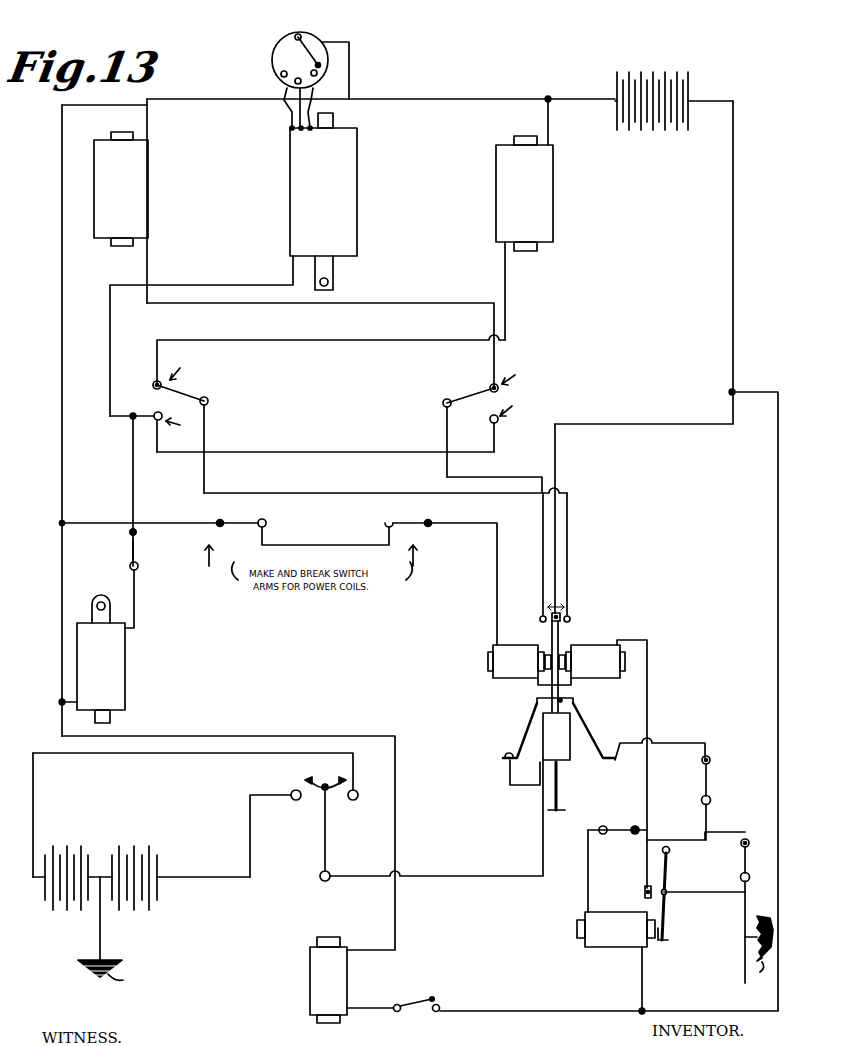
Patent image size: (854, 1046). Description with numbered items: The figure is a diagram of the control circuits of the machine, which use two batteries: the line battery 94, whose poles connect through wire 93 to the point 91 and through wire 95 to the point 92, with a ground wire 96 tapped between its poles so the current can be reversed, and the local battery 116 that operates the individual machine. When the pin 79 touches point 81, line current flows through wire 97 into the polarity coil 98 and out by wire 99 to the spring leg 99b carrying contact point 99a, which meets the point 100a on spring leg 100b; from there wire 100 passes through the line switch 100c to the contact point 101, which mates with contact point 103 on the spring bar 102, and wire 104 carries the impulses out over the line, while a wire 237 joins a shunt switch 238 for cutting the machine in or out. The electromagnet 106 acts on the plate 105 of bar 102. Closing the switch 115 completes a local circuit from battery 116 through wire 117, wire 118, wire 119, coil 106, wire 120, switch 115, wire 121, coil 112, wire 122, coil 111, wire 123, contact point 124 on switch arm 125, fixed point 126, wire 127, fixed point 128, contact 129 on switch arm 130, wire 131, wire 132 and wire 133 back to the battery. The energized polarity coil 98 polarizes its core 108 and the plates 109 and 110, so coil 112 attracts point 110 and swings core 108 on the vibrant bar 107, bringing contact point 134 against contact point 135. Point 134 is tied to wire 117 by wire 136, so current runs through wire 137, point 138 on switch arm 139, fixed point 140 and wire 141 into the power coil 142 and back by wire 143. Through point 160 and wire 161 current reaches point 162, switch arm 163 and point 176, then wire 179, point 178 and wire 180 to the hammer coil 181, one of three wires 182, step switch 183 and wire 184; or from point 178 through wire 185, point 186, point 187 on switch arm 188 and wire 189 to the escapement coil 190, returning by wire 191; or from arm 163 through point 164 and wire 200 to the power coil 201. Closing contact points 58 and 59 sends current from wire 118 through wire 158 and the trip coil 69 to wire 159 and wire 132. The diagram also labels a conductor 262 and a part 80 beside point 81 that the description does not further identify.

The wire 133 is at (207, 98).
The conductor to power coil 262 is at (148, 127).
The wire 132 is at (64, 398).
The power coil 201 is at (149, 208).
The hammer operating coil 181 is at (358, 222).
The step switch 183 is at (280, 42).
The wire 184 is at (350, 64).
The wires 182 is at (298, 110).
The wire 200 is at (372, 303).
The wire 143 is at (549, 126).
The power coil 142 is at (554, 218).
The local battery 116 is at (665, 100).
The wire 117 is at (734, 298).
The wire 118 is at (776, 598).
The wire 141 is at (190, 340).
The wire 180 is at (110, 350).
The fixed point 140 is at (153, 384).
The switch arm 139 is at (184, 396).
The point 138 is at (208, 401).
The point 178 is at (154, 415).
The wire 179 is at (335, 452).
The point 164 is at (499, 378).
The switch arm 163 is at (458, 398).
The point 162 is at (435, 438).
The point 176 is at (498, 421).
The wire 136 is at (628, 426).
The wire 161 is at (503, 477).
The wire 137 is at (370, 493).
The wire 131 is at (88, 523).
The wire 185 is at (135, 500).
The point 186 is at (129, 532).
The switch arm 188 is at (135, 548).
The contact 129 is at (224, 520).
The switch arm 130 is at (222, 528).
The fixed contact point 128 is at (266, 520).
The wire 127 is at (340, 544).
The fixed contact point 126 is at (392, 519).
The contact point 124 is at (430, 520).
The switch arm 125 is at (426, 528).
The wire 123 is at (498, 556).
The point 187 is at (138, 566).
The wire 189 is at (135, 600).
The escapement coil 190 is at (126, 681).
The wire 191 is at (66, 708).
The wire 159 is at (342, 736).
The wire 95 is at (354, 763).
The line battery 94 is at (137, 885).
The ground wire 96 is at (102, 940).
The wire 93 is at (248, 856).
The point 91 is at (292, 790).
The point 92 is at (358, 797).
The pole changing switch 80 is at (316, 778).
The point 81 is at (334, 778).
The pin 79 is at (326, 840).
The wire 97 is at (350, 876).
The trip coil 69 is at (309, 997).
The wire 158 is at (362, 1013).
The contact point 58 is at (410, 1012).
The contact point 59 is at (436, 1012).
The point 160 is at (540, 619).
The contact point 135 is at (570, 616).
The contact point 134 is at (560, 612).
The core 108 is at (559, 638).
The plate 110 is at (560, 655).
The coil 111 is at (492, 672).
The coil 112 is at (621, 667).
The plate 109 is at (540, 684).
The wire 122 is at (540, 690).
The wire 121 is at (648, 692).
The contact point 100a is at (574, 700).
The contact point 99a is at (552, 705).
The spring leg 100b is at (588, 738).
The spring leg 99b is at (512, 750).
The wire 99 is at (508, 775).
The polarity coil 98 is at (566, 752).
The vibrant bar 107 is at (558, 797).
The wire 100 is at (668, 743).
The line switch 100c is at (710, 777).
The switch 115 is at (609, 826).
The wire 237 is at (722, 832).
The shunt switch 238 is at (740, 875).
The wire 120 is at (589, 885).
The spring bar 102 is at (667, 865).
The contact point 103 is at (668, 888).
The contact point 101 is at (644, 893).
The wire 104 is at (695, 892).
The plate 105 is at (660, 940).
The electromagnet 106 is at (595, 948).
The wire 119 is at (643, 992).